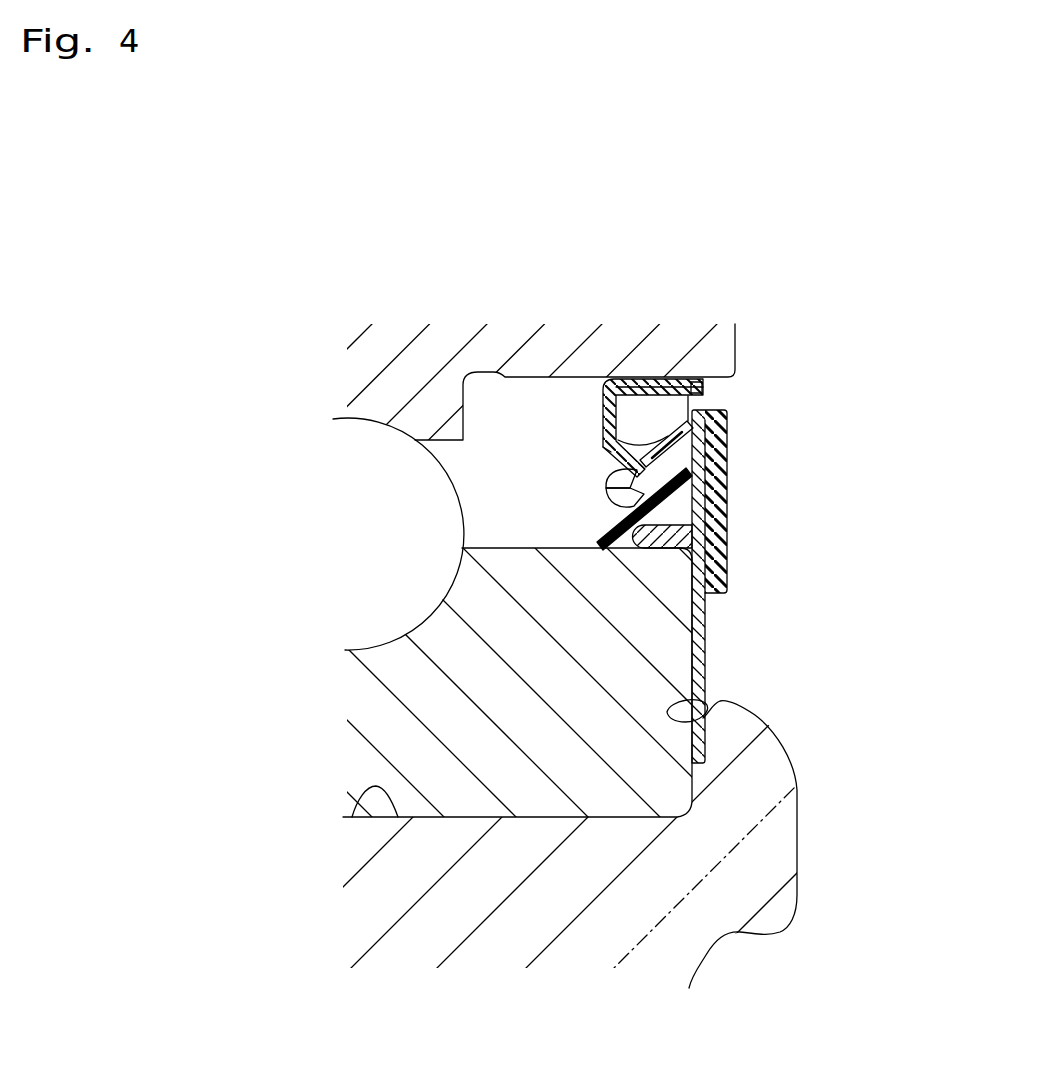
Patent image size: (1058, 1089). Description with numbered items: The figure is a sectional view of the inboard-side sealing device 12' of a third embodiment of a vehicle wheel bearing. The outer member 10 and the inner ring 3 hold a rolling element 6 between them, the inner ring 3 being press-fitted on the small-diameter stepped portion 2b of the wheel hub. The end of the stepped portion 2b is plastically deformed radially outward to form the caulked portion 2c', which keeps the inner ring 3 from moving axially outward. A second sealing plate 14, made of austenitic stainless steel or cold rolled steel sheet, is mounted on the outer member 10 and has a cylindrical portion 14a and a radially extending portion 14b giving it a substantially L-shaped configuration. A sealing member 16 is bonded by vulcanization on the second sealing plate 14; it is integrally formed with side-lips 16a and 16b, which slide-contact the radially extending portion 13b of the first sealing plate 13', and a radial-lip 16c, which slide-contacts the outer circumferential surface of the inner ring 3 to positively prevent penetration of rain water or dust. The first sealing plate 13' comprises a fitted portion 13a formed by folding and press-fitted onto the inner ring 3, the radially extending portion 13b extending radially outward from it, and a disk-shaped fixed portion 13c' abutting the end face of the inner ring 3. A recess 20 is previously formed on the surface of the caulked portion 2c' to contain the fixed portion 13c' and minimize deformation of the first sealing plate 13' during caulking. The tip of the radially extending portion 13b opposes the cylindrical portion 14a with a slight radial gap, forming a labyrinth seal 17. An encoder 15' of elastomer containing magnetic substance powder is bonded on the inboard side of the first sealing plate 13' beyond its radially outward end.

The outer member 10 is at (465, 345).
The rolling elements 6 is at (352, 433).
The inner ring 3 is at (465, 736).
The stepped portion 2b is at (360, 816).
The caulked portion 2c' is at (802, 844).
The recess 20 is at (667, 705).
The first sealing plate 13' is at (763, 586).
The fitted portion 13a is at (700, 519).
The radially extending portion 13b is at (700, 475).
The fixed portion 13c' is at (770, 586).
The encoder 15' is at (768, 501).
The second sealing plate 14 is at (699, 318).
The cylindrical portion 14a is at (654, 348).
The radially extending portion 14b is at (593, 348).
The labyrinth seal 17 is at (706, 399).
The sealing device 12' is at (784, 385).
The sealing member 16 is at (473, 500).
The side-lip 16a is at (603, 447).
The side-lip 16b is at (610, 470).
The radial-lip 16c is at (608, 517).